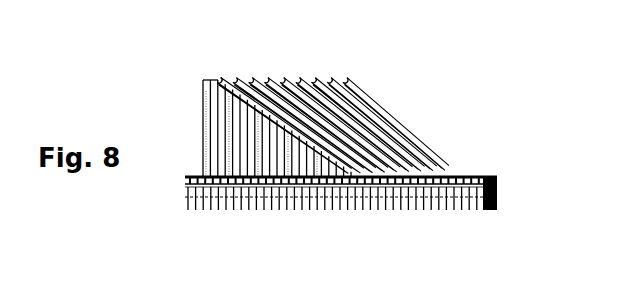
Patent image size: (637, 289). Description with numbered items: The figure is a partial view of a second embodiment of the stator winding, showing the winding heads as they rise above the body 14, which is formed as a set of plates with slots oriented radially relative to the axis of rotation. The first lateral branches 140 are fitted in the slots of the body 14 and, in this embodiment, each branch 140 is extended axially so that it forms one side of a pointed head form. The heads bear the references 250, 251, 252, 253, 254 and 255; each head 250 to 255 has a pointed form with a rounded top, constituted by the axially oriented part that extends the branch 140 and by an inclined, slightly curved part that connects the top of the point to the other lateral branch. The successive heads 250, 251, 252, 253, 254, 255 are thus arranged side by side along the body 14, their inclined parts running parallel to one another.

The body 14 is at (497, 193).
The first lateral branch 140 is at (203, 103).
The head 250 is at (219, 76).
The head 251 is at (236, 76).
The head 252 is at (267, 76).
The head 253 is at (288, 74).
The head 254 is at (314, 76).
The head 255 is at (346, 77).